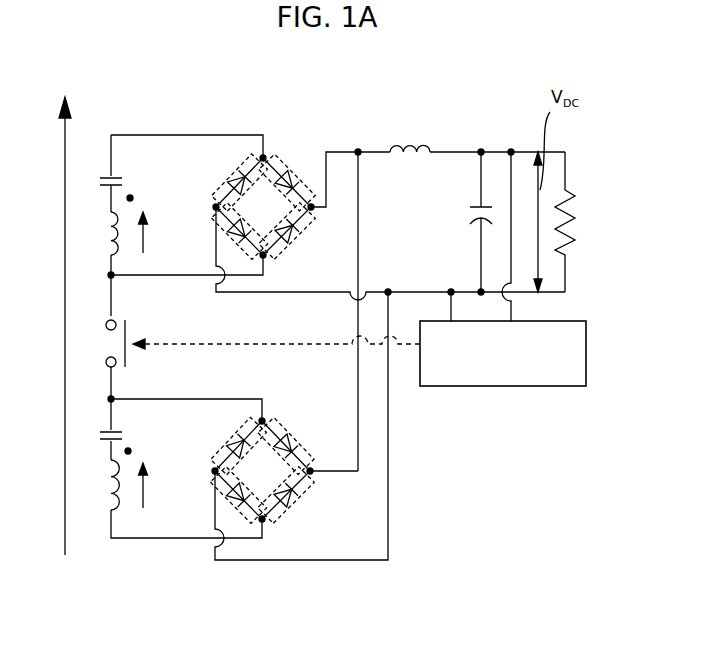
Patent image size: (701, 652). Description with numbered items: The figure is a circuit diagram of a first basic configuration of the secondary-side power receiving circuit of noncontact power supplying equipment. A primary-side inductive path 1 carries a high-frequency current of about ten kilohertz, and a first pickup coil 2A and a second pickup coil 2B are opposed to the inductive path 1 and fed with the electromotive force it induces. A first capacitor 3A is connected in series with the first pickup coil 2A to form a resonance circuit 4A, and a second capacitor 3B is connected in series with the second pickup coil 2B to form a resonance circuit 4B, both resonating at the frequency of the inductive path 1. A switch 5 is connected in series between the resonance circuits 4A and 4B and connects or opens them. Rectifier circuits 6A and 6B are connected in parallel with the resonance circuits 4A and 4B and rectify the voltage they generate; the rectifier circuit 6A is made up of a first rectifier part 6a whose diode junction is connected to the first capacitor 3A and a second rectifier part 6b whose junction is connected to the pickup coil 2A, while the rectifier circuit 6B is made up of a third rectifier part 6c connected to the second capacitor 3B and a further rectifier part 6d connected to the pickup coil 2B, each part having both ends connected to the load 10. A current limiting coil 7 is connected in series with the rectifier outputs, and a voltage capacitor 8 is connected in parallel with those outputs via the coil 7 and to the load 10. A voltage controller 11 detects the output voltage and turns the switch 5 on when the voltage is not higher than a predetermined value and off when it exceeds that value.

The primary-side inductive path 1 is at (63, 290).
The first pickup coil 2A is at (128, 208).
The second pickup coil 2B is at (118, 507).
The first capacitor 3A is at (122, 178).
The second capacitor 3B is at (122, 432).
The resonance circuit 4A is at (104, 217).
The resonance circuit 4B is at (103, 446).
The switch 5 is at (125, 362).
The rectifier circuit 6A is at (270, 180).
The rectifier circuit 6B is at (276, 456).
The first rectifier part 6a is at (243, 152).
The second rectifier part 6b is at (277, 257).
The third rectifier part 6c is at (302, 435).
The second rectifier part 6d is at (280, 518).
The current limiting coil 7 is at (420, 143).
The voltage capacitor 8 is at (468, 222).
The load 10 is at (577, 223).
The voltage controller 11 is at (497, 387).